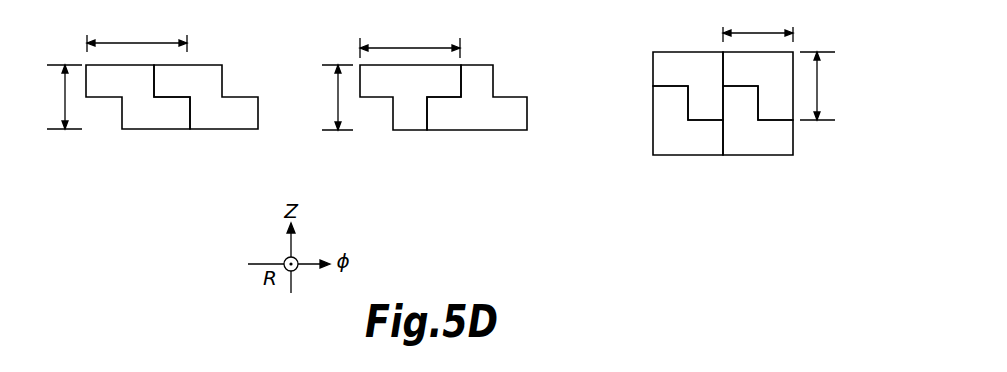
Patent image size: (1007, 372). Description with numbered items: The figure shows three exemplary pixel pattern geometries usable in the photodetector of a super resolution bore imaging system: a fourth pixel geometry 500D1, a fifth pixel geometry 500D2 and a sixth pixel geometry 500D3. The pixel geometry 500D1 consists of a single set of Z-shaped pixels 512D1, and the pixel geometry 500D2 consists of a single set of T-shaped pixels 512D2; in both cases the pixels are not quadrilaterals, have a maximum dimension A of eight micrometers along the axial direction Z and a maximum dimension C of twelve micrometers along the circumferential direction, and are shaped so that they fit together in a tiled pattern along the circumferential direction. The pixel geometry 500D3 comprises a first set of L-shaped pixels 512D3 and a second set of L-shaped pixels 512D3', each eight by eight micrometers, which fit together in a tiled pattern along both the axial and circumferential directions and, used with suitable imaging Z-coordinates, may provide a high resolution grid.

The pixel geometry 500D1 is at (158, 129).
The pixel geometry 500D2 is at (424, 132).
The pixel geometry 500D3 is at (718, 126).
The set of Z-shaped pixels 512D1 is at (278, 58).
The set of T-shaped pixels 512D2 is at (510, 86).
The set of L-shaped pixels 512D3 is at (649, 120).
The set of L-shaped pixels 512D3' is at (661, 69).